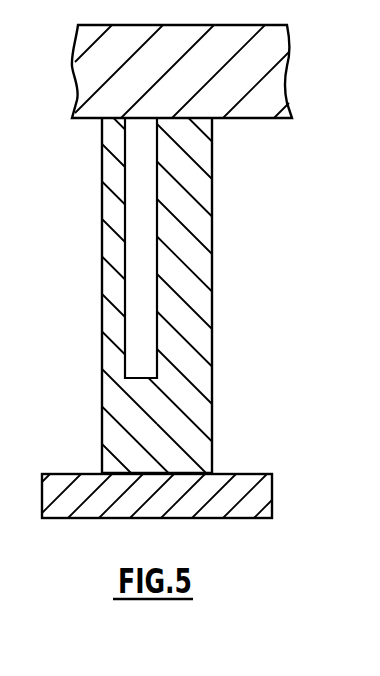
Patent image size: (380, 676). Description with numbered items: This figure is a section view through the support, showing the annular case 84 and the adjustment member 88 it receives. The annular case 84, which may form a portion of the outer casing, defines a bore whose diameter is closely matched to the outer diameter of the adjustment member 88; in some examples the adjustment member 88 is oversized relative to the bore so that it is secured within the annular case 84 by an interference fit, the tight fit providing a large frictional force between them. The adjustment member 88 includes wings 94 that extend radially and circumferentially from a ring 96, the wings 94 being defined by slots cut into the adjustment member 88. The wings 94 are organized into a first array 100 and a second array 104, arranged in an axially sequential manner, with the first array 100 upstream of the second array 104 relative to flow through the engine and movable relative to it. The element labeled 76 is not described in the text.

The annular case 84 is at (267, 50).
The base plate 76 is at (273, 495).
The adjustment member 88 is at (197, 265).
The second array 104 is at (198, 310).
The ring 96 is at (117, 403).
The first array 100 is at (102, 260).
The wings 94 is at (117, 220).